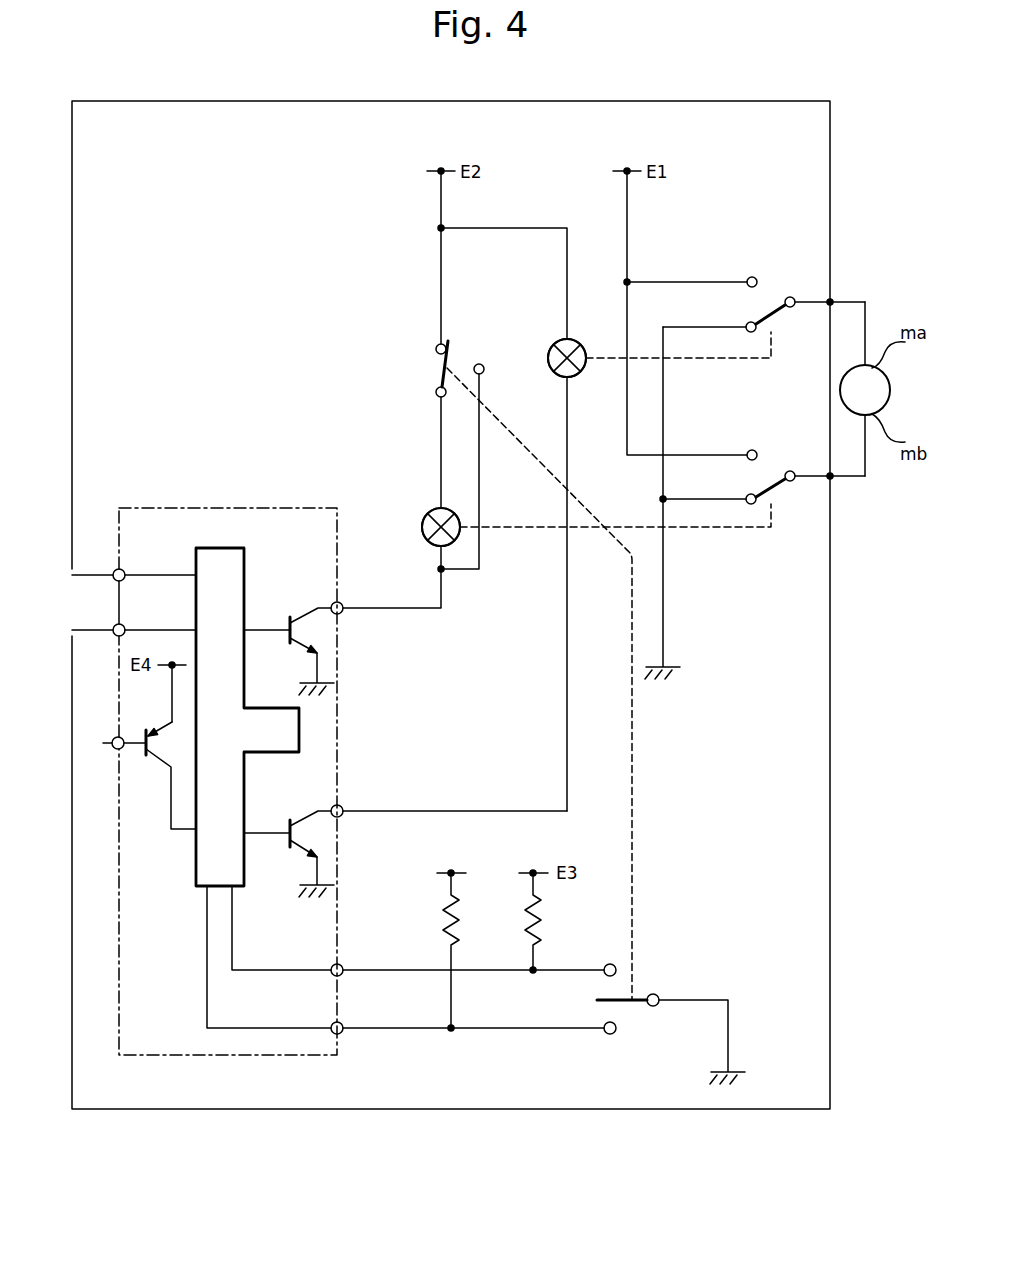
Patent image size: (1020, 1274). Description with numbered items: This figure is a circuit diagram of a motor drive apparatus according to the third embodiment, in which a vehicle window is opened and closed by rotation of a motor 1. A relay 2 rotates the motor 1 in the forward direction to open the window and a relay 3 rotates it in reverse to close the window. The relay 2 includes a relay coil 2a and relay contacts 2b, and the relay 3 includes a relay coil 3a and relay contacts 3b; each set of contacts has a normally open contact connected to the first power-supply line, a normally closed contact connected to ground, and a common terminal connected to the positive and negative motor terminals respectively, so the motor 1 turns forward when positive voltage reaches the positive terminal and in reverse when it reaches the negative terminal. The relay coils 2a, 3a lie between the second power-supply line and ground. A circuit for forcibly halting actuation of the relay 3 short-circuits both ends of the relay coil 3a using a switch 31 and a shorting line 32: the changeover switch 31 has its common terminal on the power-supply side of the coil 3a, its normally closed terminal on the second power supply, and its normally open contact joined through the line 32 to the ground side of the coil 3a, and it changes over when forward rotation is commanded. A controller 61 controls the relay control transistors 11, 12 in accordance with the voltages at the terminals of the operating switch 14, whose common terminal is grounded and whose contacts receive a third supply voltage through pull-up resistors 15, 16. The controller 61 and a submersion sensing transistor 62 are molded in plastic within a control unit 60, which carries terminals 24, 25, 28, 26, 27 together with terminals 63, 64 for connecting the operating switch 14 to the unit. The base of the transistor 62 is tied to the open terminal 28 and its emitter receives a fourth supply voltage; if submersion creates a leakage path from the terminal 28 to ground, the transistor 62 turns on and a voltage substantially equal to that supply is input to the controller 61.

The motor 1 is at (889, 392).
The relay 2 is at (588, 336).
The relay coil 2a is at (553, 346).
The relay contacts 2b is at (772, 292).
The relay 3 is at (452, 495).
The relay coil 3a is at (432, 511).
The relay contacts 3b is at (772, 466).
The relay control transistor 11 is at (302, 811).
The relay control transistor 12 is at (305, 611).
The operating switch 14 is at (640, 1006).
The pull-up resistor 15 is at (524, 930).
The pull-up resistor 16 is at (442, 930).
The terminal 24 is at (115, 570).
The terminal 25 is at (115, 636).
The terminal 26 is at (342, 816).
The terminal 27 is at (332, 604).
The open terminal 28 is at (114, 749).
The switch 31 is at (462, 352).
The shorting line 32 is at (480, 549).
The control unit 60 is at (248, 506).
The controller 61 is at (218, 547).
The submersion sensing transistor 62 is at (163, 764).
The terminal 63 is at (342, 966).
The terminal 64 is at (342, 1034).